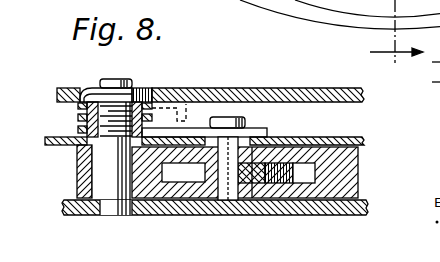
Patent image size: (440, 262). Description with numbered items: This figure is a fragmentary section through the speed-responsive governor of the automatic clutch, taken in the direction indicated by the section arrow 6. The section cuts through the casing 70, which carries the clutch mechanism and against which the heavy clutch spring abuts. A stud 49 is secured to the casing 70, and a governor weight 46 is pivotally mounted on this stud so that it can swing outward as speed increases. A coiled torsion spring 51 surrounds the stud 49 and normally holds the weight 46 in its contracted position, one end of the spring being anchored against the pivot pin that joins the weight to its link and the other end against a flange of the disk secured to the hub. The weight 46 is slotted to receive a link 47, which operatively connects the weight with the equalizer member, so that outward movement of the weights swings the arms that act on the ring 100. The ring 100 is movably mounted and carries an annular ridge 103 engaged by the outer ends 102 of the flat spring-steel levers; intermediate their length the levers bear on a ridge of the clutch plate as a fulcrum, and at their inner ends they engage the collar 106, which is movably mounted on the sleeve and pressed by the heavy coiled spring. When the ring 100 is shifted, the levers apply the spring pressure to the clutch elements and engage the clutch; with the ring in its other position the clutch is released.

The section line of Fig. 6 is at (340, 41).
The ring 100 is at (240, 89).
The coiled torsion spring 51 is at (78, 116).
The outer ends 102 is at (333, 143).
The annular ridge 103 is at (268, 143).
The stud 49 is at (102, 163).
The governor weight 46 is at (358, 167).
The collar 106 is at (182, 181).
The link 47 is at (258, 183).
The casing 70 is at (233, 204).